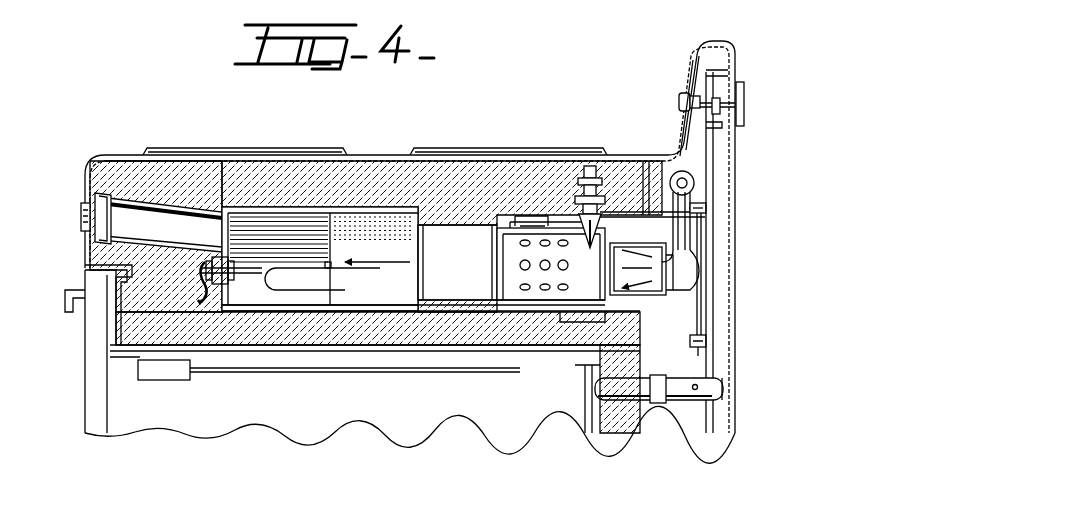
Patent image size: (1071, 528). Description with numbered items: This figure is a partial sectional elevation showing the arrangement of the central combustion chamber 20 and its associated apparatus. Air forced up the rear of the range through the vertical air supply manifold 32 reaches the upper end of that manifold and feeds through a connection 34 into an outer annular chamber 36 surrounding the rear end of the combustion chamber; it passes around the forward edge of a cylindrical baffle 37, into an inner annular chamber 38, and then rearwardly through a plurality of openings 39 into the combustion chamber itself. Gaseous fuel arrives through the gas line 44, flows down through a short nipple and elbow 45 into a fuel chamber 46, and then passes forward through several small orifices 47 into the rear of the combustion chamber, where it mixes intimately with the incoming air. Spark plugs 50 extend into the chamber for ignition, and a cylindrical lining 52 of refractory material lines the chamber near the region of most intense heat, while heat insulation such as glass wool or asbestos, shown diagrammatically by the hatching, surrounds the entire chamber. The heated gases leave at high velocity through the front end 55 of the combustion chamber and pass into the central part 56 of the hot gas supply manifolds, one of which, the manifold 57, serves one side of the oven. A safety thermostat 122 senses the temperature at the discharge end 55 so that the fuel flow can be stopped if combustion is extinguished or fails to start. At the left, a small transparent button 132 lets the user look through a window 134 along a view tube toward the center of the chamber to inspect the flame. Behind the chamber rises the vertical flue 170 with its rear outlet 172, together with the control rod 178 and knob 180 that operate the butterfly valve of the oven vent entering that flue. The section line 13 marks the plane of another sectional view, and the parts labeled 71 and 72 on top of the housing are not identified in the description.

The section line 13- 13 is at (722, 13).
The combustion chamber 20 is at (400, 186).
The air supply manifold 32 is at (706, 348).
The connection 34 is at (702, 306).
The outer annular chamber 36 is at (550, 218).
The cylindrical baffle 37 is at (535, 314).
The inner annular chamber 38 is at (530, 217).
The openings 39 is at (520, 287).
The gas line 44 is at (695, 180).
The short nipple and elbow 45 is at (690, 224).
The fuel chamber 46 is at (620, 380).
The small orifices 47 is at (612, 290).
The spark plugs 50 is at (608, 158).
The cylindrical lining 52 is at (428, 232).
The front end of combustion chamber 55 is at (331, 266).
The central part of hot gas supply manifolds 56 is at (258, 207).
The hot gas supply manifold 57 is at (380, 305).
The top plate 71 is at (304, 146).
The top plate 72 is at (469, 146).
The safety thermostat 122 is at (252, 275).
The transparent button 132 is at (84, 214).
The window 134 is at (100, 200).
The vertical flue 170 is at (717, 420).
The rear outlet 172 is at (745, 100).
The control rod 178 is at (714, 140).
The knob 180 is at (688, 97).